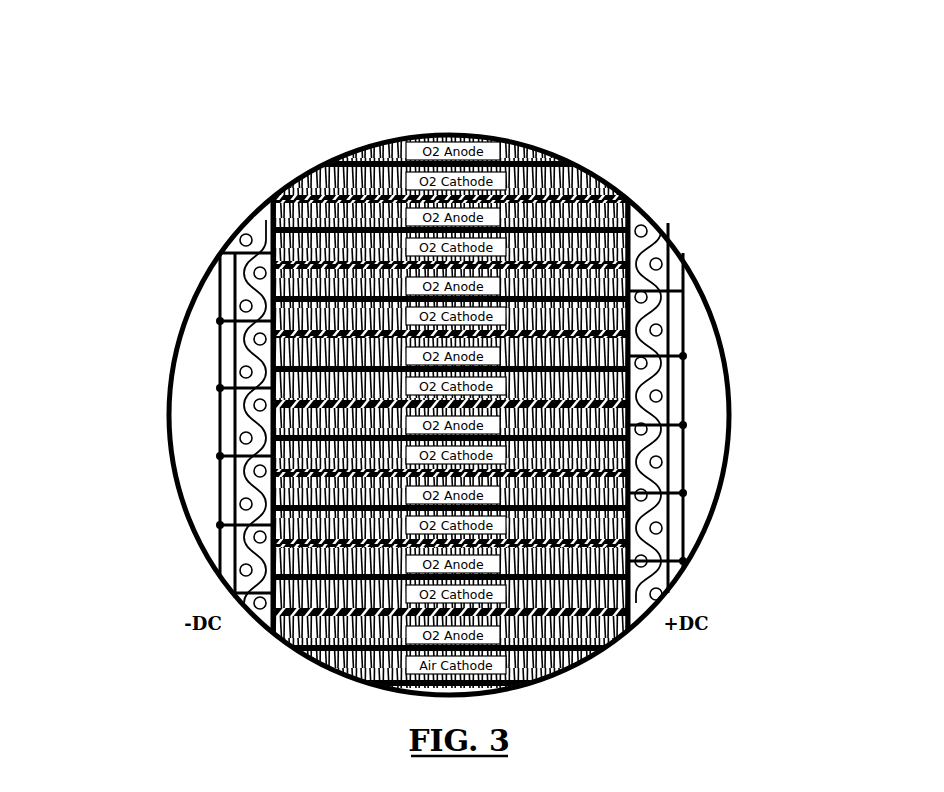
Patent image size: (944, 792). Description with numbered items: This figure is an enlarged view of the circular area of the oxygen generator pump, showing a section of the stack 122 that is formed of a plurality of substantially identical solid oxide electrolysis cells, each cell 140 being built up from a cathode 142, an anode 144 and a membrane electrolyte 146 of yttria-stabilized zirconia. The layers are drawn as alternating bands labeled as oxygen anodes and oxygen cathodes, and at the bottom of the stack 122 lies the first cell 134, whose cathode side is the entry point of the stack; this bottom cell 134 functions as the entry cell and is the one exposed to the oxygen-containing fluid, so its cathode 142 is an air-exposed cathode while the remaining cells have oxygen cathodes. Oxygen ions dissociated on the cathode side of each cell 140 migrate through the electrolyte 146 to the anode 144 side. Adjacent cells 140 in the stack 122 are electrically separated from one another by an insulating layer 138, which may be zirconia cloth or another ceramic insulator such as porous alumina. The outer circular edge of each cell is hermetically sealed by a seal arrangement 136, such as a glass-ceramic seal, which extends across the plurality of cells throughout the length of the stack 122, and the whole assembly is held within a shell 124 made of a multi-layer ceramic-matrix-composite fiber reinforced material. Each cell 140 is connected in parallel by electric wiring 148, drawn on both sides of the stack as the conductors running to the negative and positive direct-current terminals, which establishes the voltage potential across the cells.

The stack 122 is at (272, 343).
The shell 124 is at (247, 212).
The first cell 134 is at (383, 683).
The seal arrangement 136 is at (624, 194).
The insulating layer 138 is at (627, 400).
The cell 140 is at (262, 537).
The cathode 142 is at (620, 517).
The anode 144 is at (622, 472).
The membrane electrolyte 146 is at (260, 497).
The electric wiring 148 is at (212, 380).